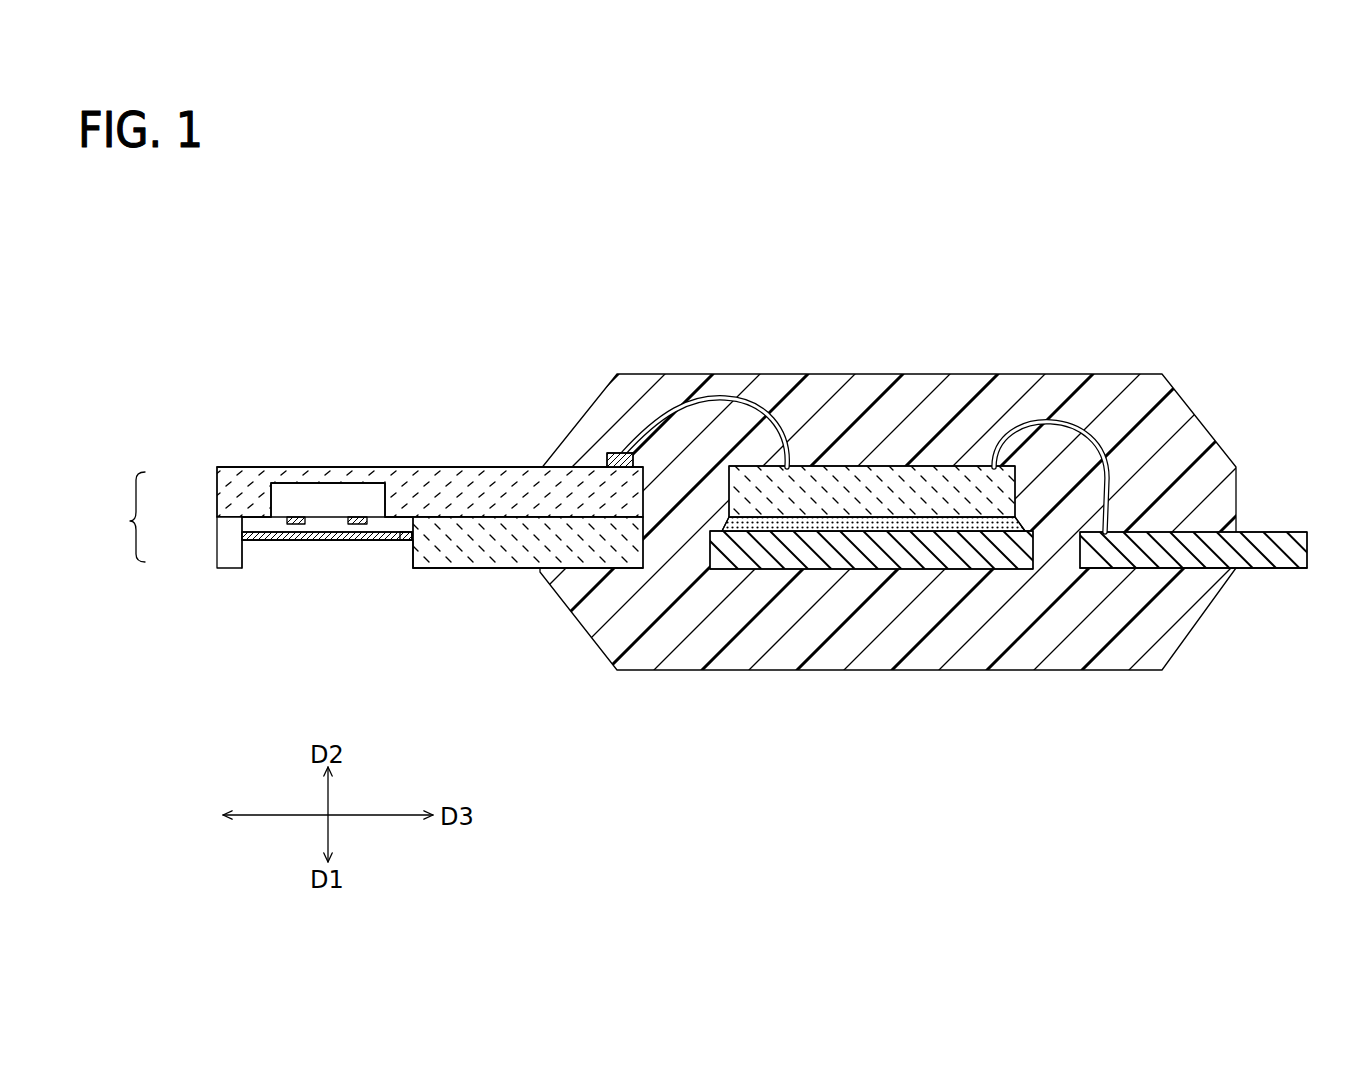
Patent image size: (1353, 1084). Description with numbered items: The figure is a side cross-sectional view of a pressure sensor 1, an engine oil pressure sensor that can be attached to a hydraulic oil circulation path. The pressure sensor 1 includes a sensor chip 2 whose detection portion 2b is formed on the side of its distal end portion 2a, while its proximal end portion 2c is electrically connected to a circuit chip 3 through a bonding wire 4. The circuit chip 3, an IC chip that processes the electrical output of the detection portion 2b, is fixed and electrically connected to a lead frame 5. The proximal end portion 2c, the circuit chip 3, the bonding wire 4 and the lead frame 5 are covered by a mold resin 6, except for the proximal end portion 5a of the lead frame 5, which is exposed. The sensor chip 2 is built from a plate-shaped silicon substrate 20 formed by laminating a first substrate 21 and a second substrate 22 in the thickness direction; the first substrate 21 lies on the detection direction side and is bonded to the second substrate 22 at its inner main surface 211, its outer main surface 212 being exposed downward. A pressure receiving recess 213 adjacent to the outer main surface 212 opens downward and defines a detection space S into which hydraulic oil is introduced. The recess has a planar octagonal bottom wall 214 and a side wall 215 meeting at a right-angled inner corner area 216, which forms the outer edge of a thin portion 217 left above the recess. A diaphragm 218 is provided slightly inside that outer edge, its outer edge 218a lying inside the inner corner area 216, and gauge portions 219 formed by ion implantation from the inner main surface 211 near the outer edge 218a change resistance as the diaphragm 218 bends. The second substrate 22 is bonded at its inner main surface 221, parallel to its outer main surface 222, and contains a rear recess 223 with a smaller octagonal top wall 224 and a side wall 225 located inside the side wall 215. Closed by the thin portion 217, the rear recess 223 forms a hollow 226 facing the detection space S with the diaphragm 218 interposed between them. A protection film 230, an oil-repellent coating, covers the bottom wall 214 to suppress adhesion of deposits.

The pressure sensor 1 is at (1253, 222).
The sensor chip 2 is at (373, 516).
The distal end portion 2a is at (233, 464).
The detection portion 2b is at (327, 465).
The proximal end portion 2c is at (600, 456).
The circuit chip 3 is at (897, 468).
The bonding wire 4 is at (723, 399).
The lead frame 5 is at (1200, 527).
The proximal end portion 5a is at (1275, 568).
The mold resin 6 is at (1172, 412).
The substrate 20 is at (121, 517).
The first substrate 21 is at (394, 543).
The second substrate 22 is at (394, 449).
The inner main surface 211 is at (525, 505).
The outer main surface 212 is at (527, 570).
The pressure receiving recess 213 is at (396, 548).
The bottom wall 214 is at (323, 541).
The side wall 215 is at (256, 534).
The inner corner area 216 is at (404, 545).
The thin portion 217 is at (398, 495).
The diaphragm 218 is at (330, 528).
The outer edge 218a is at (268, 520).
The gauge portions 219 is at (300, 515).
The inner main surface 221 is at (222, 570).
The outer main surface 222 is at (476, 480).
The rear recess 223 is at (349, 487).
The top wall 224 is at (272, 483).
The side wall 225 is at (360, 482).
The hollow 226 is at (268, 490).
The protection film 230 is at (285, 541).
The detection space S is at (296, 550).